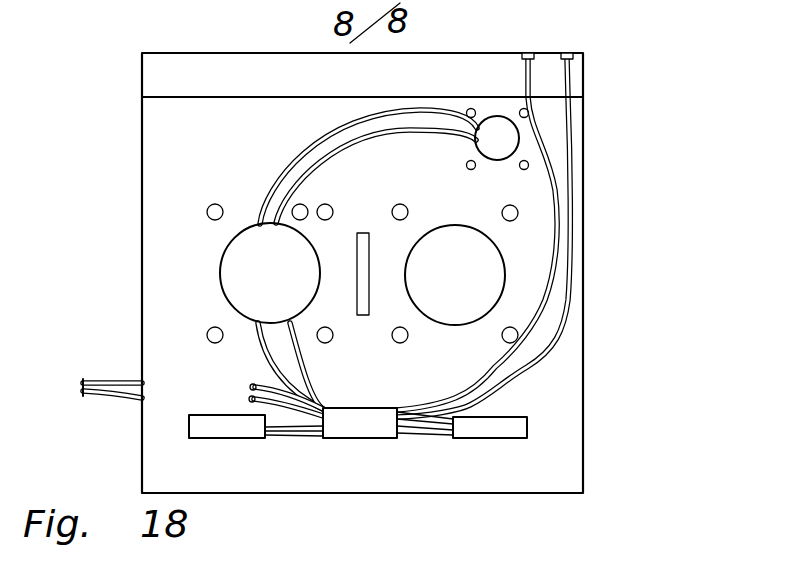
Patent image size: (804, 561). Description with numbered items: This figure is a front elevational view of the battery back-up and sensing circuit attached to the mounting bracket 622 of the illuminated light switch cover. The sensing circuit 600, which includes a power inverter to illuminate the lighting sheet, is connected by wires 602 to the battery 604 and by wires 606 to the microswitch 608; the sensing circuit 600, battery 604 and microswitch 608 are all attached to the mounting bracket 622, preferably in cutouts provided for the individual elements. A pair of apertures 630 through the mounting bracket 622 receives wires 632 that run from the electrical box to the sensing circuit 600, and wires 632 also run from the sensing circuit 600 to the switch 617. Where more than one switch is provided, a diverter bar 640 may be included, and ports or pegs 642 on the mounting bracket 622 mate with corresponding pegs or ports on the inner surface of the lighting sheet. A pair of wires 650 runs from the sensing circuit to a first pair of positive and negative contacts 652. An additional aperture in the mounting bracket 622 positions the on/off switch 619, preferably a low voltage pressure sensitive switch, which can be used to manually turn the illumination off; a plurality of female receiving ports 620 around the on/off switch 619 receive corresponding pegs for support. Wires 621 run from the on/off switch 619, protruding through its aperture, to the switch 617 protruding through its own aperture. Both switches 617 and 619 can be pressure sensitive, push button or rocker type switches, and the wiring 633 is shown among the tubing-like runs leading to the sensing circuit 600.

The sensing circuit 600 is at (393, 439).
The wires 602 is at (435, 428).
The battery 604 is at (528, 419).
The wires 606 is at (298, 439).
The microswitch 608 is at (189, 421).
The switch 617 is at (505, 258).
The on/off switch 619 is at (486, 117).
The female receiving ports 620 is at (467, 110).
The wires 621 is at (383, 132).
The mounting bracket 622 is at (567, 370).
The apertures 630 is at (250, 386).
The wires 632 is at (249, 399).
The tubing 633 is at (303, 362).
The diverter bar 640 is at (368, 233).
The ports or pegs 642 is at (212, 204).
The wires 650 is at (537, 320).
The positive and negative contacts 652 is at (531, 54).